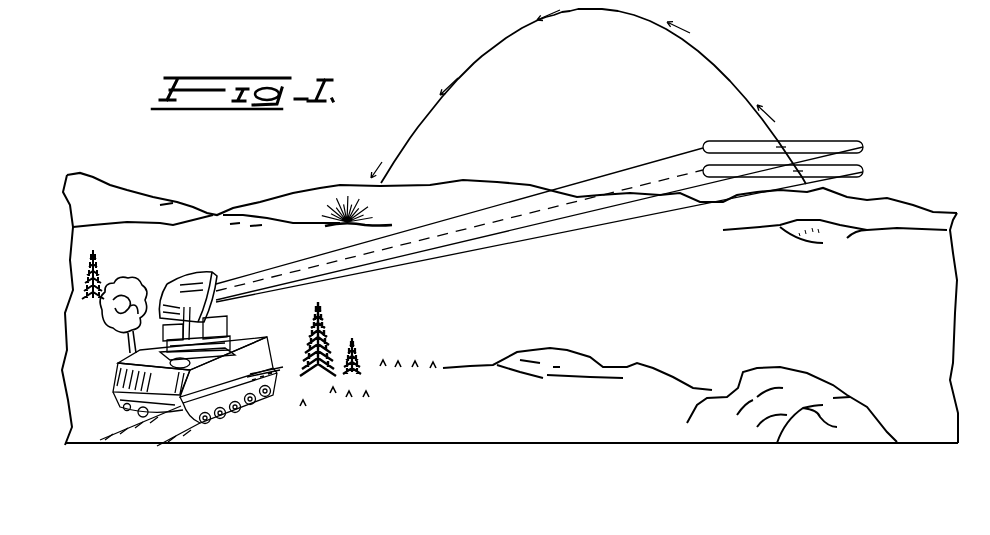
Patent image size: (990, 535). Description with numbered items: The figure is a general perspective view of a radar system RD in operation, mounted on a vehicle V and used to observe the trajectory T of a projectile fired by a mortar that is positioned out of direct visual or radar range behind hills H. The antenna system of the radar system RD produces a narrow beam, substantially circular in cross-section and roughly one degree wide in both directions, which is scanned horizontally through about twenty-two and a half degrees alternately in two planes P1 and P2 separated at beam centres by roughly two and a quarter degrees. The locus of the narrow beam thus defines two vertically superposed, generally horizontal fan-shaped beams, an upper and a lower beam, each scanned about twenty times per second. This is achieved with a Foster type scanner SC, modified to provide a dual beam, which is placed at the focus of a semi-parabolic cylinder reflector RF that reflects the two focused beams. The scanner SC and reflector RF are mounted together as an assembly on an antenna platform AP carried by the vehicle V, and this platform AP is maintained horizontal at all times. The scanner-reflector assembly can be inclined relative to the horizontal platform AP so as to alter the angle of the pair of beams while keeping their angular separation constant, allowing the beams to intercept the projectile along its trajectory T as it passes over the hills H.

The trajectory T is at (731, 52).
The first plane P1 is at (829, 140).
The second plane P2 is at (865, 160).
The hills H is at (880, 197).
The radar system RD is at (180, 242).
The semi-parabolic cylinder reflector RF is at (170, 282).
The scanner SC is at (213, 307).
The antenna platform AP is at (128, 347).
The vehicle V is at (177, 391).